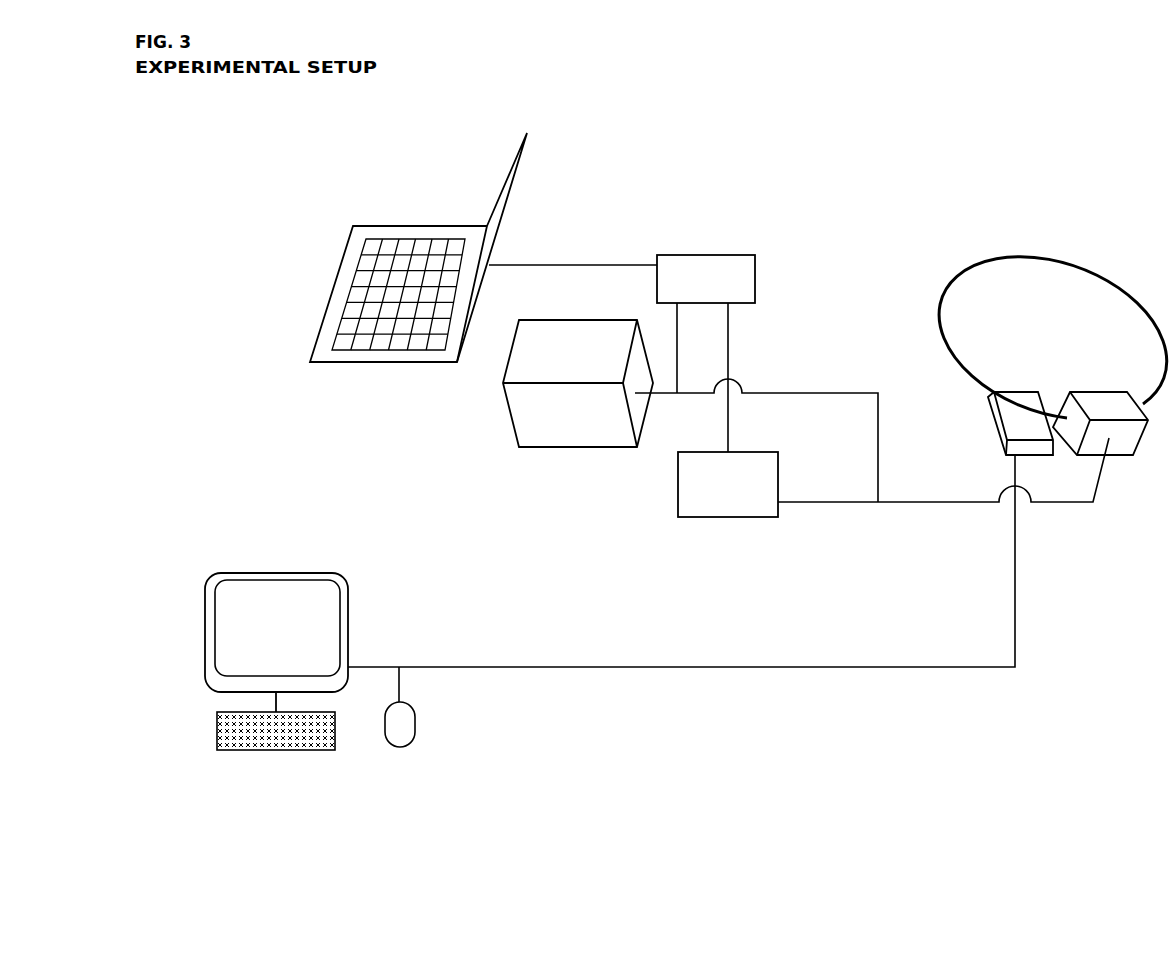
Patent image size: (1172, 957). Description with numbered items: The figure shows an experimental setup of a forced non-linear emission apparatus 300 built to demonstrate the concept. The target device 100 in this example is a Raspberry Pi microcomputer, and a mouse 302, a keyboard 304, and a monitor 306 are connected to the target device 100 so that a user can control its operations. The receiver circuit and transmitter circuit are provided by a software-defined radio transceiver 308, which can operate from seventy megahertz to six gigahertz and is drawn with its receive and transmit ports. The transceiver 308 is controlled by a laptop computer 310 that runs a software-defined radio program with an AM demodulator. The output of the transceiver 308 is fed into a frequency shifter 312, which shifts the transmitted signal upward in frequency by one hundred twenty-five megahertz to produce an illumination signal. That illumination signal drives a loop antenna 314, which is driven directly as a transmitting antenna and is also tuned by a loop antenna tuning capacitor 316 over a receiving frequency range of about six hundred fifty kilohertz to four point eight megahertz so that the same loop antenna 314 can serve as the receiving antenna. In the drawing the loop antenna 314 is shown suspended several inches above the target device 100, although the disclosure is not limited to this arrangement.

The forced non-linear emission apparatus 300 is at (963, 115).
The target device 100 is at (988, 418).
The mouse 302 is at (383, 725).
The keyboard 304 is at (217, 725).
The monitor 306 is at (220, 573).
The software-defined radio transceiver 308 is at (675, 253).
The laptop computer 310 is at (402, 220).
The frequency shifter 312 is at (678, 501).
The loop antenna 314 is at (1010, 255).
The loop antenna tuning capacitor 316 is at (513, 430).